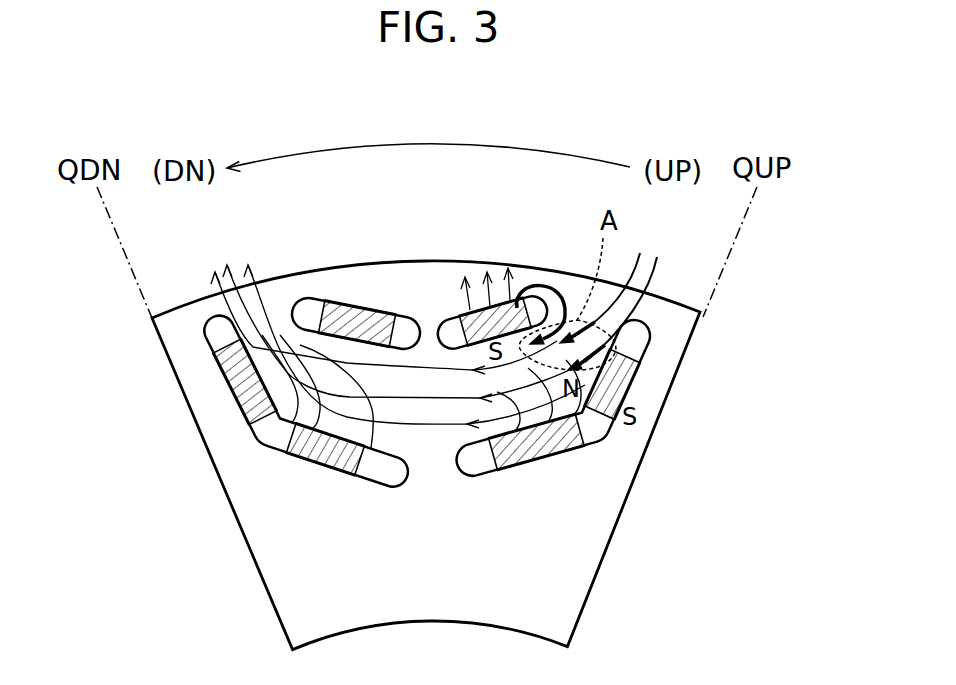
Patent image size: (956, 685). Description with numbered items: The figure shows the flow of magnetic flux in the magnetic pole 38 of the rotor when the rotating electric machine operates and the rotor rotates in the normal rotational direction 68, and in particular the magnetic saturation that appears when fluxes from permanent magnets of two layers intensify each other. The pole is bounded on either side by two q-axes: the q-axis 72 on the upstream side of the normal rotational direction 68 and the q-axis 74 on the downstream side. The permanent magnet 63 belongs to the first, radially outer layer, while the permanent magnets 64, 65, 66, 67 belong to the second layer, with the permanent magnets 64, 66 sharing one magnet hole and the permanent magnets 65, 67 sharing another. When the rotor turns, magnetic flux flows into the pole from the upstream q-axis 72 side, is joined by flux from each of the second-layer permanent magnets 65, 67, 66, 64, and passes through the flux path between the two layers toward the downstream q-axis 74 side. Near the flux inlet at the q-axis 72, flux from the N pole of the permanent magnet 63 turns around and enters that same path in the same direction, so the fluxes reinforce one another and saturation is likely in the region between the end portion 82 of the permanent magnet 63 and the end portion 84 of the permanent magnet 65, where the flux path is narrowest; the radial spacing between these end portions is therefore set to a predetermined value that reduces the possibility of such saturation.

The magnetic pole 38 is at (197, 547).
The permanent magnet 63 is at (463, 312).
The permanent magnet 64 is at (237, 393).
The permanent magnet 65 is at (623, 387).
The permanent magnet 66 is at (327, 464).
The permanent magnet 67 is at (543, 457).
The normal rotational direction 68 is at (535, 150).
The q-axis 72 is at (742, 227).
The q-axis 74 is at (115, 235).
The end portion 82 is at (514, 306).
The end portion 84 is at (612, 336).